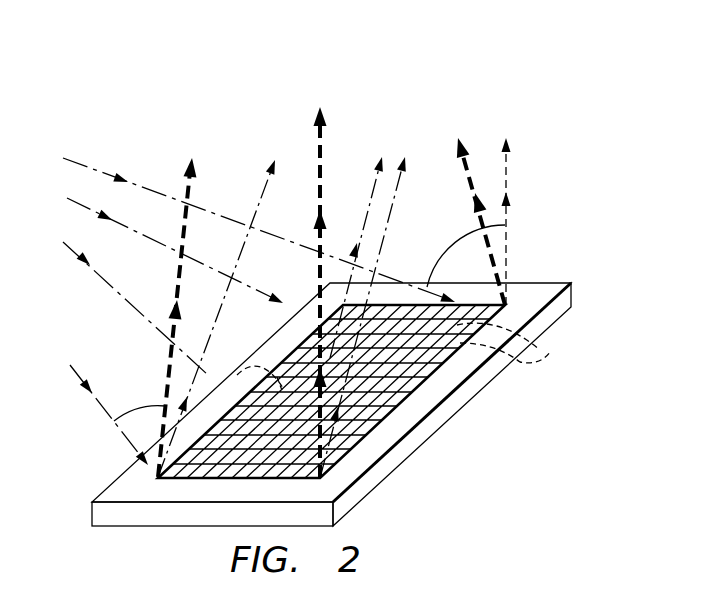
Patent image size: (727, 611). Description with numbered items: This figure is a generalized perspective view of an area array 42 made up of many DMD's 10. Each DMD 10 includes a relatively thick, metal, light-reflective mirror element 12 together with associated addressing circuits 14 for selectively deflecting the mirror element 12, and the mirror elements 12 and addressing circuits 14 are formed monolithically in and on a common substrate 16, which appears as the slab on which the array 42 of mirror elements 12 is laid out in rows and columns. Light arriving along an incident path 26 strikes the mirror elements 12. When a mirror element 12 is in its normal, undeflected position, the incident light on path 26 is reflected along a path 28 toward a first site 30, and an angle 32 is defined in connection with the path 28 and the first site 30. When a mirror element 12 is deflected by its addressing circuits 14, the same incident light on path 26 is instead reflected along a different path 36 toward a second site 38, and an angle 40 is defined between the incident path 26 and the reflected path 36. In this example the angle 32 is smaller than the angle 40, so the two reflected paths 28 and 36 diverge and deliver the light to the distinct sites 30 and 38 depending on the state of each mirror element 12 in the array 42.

The DMD 10 is at (568, 80).
The mirror element 12 is at (299, 358).
The addressing circuits 14 is at (247, 377).
The substrate 16 is at (114, 514).
The path of incident light 26 is at (160, 247).
The reflected light path 28 is at (322, 150).
The first site 30 is at (204, 142).
The angle 32 is at (132, 409).
The path of light reflected from deflected mirror 36 is at (398, 190).
The second site 38 is at (499, 208).
The angle 40 is at (447, 246).
The area array 42 is at (560, 266).